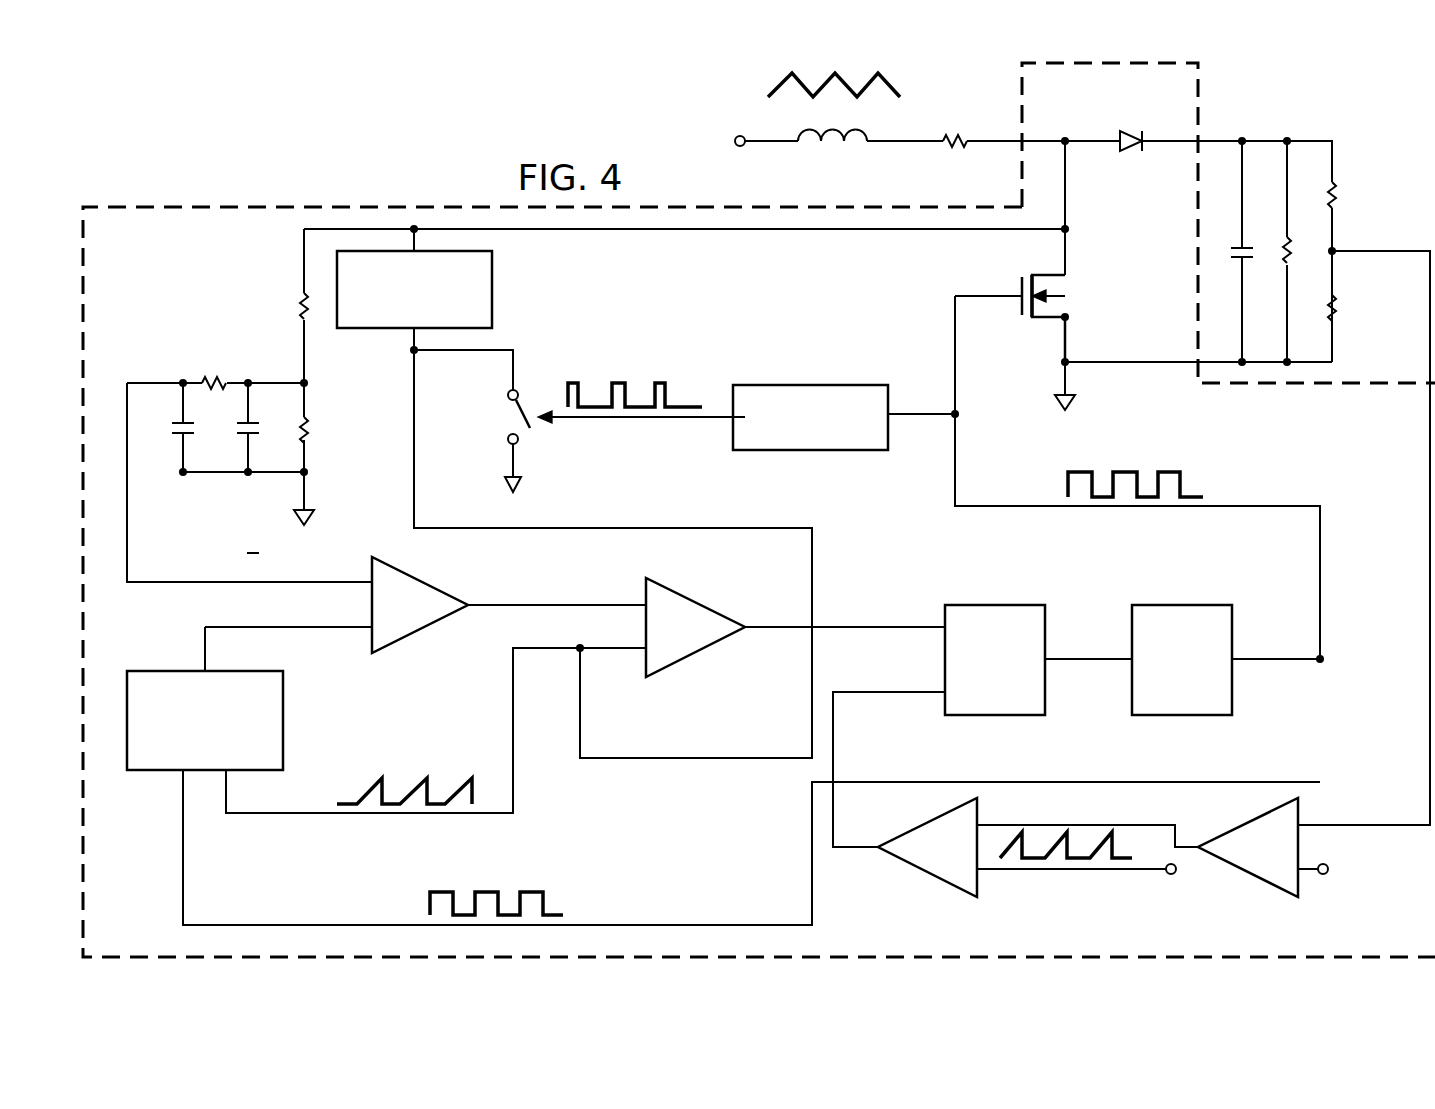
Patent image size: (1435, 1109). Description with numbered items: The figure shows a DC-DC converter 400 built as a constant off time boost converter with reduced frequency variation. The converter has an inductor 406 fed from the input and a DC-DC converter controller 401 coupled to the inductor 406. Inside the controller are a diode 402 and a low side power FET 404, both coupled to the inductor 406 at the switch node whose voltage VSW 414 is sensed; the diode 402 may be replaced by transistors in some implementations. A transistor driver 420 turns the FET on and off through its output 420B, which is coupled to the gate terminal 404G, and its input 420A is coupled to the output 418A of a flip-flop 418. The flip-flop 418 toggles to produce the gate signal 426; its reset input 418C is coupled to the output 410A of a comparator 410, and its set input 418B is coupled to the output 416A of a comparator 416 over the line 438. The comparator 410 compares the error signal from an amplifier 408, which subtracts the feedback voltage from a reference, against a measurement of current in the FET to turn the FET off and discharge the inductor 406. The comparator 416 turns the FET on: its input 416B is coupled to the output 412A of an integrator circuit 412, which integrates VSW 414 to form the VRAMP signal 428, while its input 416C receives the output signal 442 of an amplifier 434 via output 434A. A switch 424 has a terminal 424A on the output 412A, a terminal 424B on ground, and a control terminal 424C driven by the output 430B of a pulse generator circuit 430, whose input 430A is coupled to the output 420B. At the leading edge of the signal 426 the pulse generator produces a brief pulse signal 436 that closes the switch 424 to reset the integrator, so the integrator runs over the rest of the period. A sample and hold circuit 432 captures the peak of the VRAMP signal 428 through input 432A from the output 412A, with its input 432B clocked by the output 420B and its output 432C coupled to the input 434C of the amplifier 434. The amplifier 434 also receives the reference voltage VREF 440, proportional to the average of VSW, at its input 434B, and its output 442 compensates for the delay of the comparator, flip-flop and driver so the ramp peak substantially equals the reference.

The DC-DC converter 400 is at (432, 103).
The DC-DC converter controller 401 is at (398, 200).
The diode 402 is at (1130, 130).
The low side power FET 404 is at (1018, 288).
The gate terminal 404G is at (1022, 296).
The inductor 406 is at (826, 152).
The amplifier 408 is at (1262, 883).
The comparator 410 is at (927, 870).
The output of comparator 410 410A is at (866, 845).
The integrator circuit 412 is at (493, 285).
The output of integrator circuit 412A is at (410, 345).
The voltage VSW 414 is at (1070, 146).
The comparator 416 is at (695, 652).
The output of comparator 416 416A is at (756, 622).
The input of comparator 416 416B is at (635, 655).
The input of comparator 416 416C is at (636, 600).
The flip-flop 418 is at (1000, 604).
The output of flip-flop 418A is at (1055, 650).
The set input 418B is at (932, 622).
The reset input 418C is at (935, 698).
The transistor driver 420 is at (1186, 604).
The input of transistor driver 420A is at (1120, 665).
The output of transistor driver 420B is at (1242, 665).
The switch 424 is at (525, 410).
The terminal of switch 424A is at (511, 380).
The terminal of switch 424B is at (511, 455).
The control terminal of switch 424C is at (570, 420).
The signal 426 is at (958, 445).
The VRAMP signal 428 is at (412, 428).
The pulse generator circuit 430 is at (790, 385).
The input of pulse generator circuit 430A is at (898, 410).
The output of pulse generator circuit 430B is at (728, 408).
The sample and hold circuit 432 is at (183, 670).
The input of sample and hold circuit 432A is at (226, 782).
The input of sample and hold circuit 432B is at (183, 782).
The output of sample and hold circuit 432C is at (208, 662).
The amplifier 434 is at (418, 632).
The output of amplifier 434 434A is at (476, 600).
The input of amplifier 434 434B is at (364, 580).
The input of amplifier 434 434C is at (368, 635).
The pulse signal 436 is at (645, 418).
The ramp comparator output line 438 is at (878, 632).
The reference voltage VREF 440 is at (130, 485).
The output signal of amplifier 434 442 is at (565, 607).